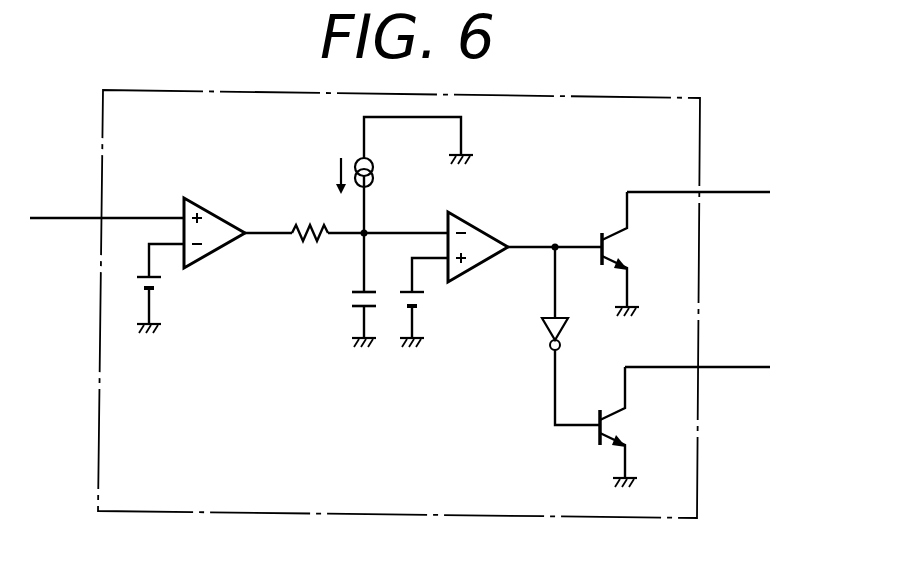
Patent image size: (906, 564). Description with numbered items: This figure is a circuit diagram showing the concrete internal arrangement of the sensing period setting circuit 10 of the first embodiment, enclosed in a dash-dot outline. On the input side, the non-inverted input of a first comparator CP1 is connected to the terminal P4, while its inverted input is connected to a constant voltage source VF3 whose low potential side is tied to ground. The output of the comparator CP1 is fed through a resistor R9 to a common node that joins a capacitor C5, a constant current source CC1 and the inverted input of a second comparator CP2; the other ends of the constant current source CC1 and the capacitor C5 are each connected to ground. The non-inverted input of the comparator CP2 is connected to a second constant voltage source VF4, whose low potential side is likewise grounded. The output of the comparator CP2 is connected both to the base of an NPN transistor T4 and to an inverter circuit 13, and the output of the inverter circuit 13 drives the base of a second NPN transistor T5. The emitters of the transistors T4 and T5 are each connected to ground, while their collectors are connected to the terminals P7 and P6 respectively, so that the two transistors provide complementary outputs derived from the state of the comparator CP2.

The sensing period setting circuit 10 is at (670, 96).
The P4 terminal P4 is at (72, 216).
The comparator CP1 is at (224, 213).
The constant voltage source VF3 is at (162, 296).
The resistor R9 is at (306, 217).
The constant current source CC1 is at (378, 180).
The capacitor C5 is at (341, 307).
The comparator CP2 is at (486, 219).
The constant voltage source VF4 is at (416, 303).
The NPN transistor T4 is at (628, 250).
The P7 terminal P7 is at (734, 192).
The inverter circuit 13 is at (562, 335).
The NPN transistor T5 is at (628, 426).
The P6 terminal P6 is at (734, 367).